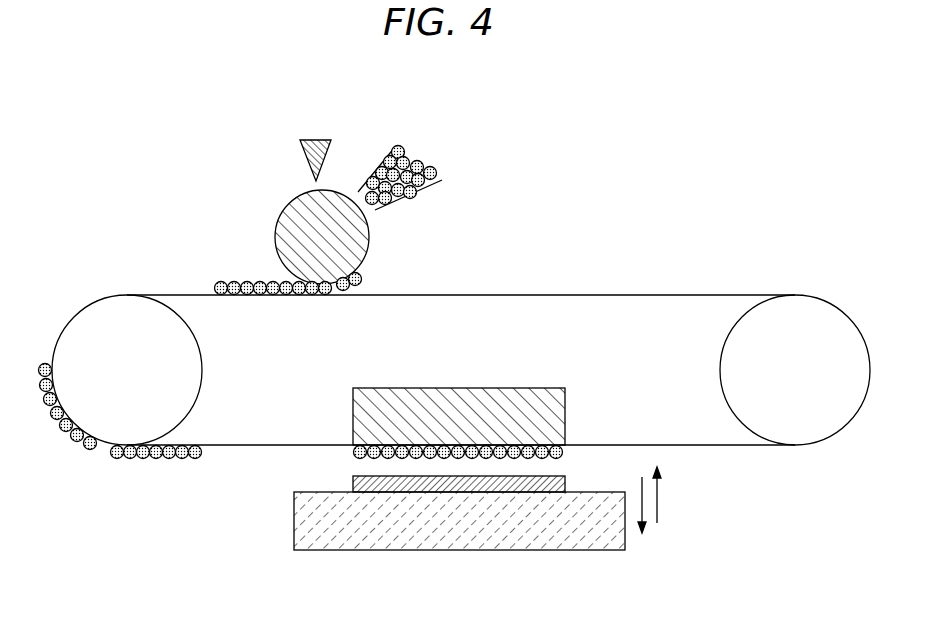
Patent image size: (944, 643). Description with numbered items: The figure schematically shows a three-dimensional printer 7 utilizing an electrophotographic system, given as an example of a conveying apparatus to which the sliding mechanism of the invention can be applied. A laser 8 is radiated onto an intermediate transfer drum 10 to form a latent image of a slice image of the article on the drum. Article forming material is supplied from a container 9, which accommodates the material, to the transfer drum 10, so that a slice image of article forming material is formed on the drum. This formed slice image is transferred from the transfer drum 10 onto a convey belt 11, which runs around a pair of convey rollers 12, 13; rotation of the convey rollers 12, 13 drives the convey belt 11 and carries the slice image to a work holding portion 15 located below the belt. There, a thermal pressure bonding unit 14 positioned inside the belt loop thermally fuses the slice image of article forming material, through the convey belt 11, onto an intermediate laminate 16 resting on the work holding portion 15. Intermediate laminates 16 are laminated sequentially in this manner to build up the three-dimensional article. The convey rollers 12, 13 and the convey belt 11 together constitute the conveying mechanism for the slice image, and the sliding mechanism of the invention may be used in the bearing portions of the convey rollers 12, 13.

The 3D printer 7 is at (175, 193).
The laser 8 is at (318, 139).
The container 9 is at (437, 144).
The intermediate transfer drum 10 is at (290, 204).
The convey belt 11 is at (734, 294).
The convey roller 12 is at (96, 312).
The convey roller 13 is at (846, 324).
The thermal pressure bonding unit 14 is at (566, 402).
The work holding portion 15 is at (313, 512).
The intermediate laminate 16 is at (461, 486).